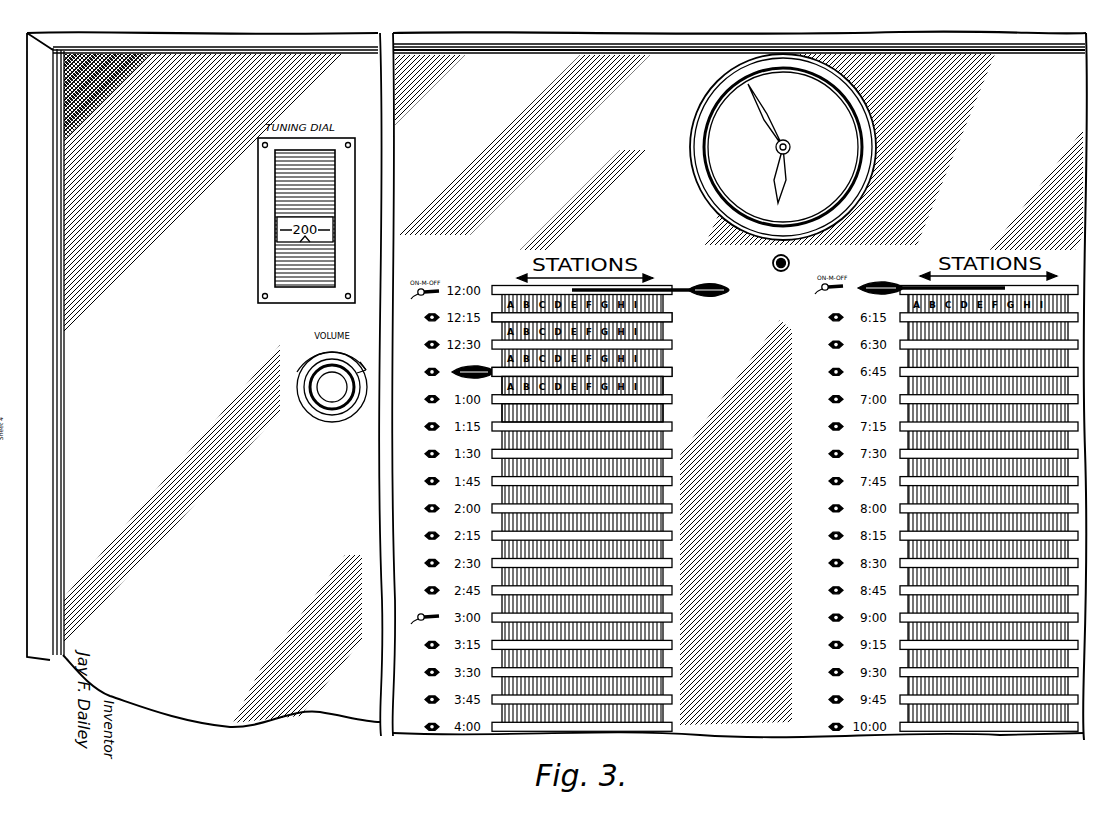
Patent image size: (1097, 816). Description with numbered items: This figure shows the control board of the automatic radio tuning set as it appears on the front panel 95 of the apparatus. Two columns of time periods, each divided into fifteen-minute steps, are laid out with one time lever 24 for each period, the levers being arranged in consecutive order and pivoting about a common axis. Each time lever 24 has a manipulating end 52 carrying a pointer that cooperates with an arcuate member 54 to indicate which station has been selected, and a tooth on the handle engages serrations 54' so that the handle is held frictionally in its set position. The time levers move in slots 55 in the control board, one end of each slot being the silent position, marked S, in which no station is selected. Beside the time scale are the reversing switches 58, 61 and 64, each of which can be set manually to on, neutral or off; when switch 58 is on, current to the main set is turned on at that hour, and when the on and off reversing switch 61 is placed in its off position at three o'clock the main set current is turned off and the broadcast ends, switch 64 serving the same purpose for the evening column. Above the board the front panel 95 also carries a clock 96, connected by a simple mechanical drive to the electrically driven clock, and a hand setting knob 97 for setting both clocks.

The front panel 95 is at (557, 386).
The clock 96 is at (783, 147).
The hand setting knob 97 is at (781, 272).
The time lever 24 is at (683, 286).
The manipulating end 52 is at (722, 284).
The slot 55 is at (682, 366).
The arcuate member 54 is at (601, 411).
The serrations 54' is at (603, 389).
The reversing switch 58 is at (421, 302).
The reversing switch 64 is at (828, 292).
The reversing switch 61 is at (434, 612).